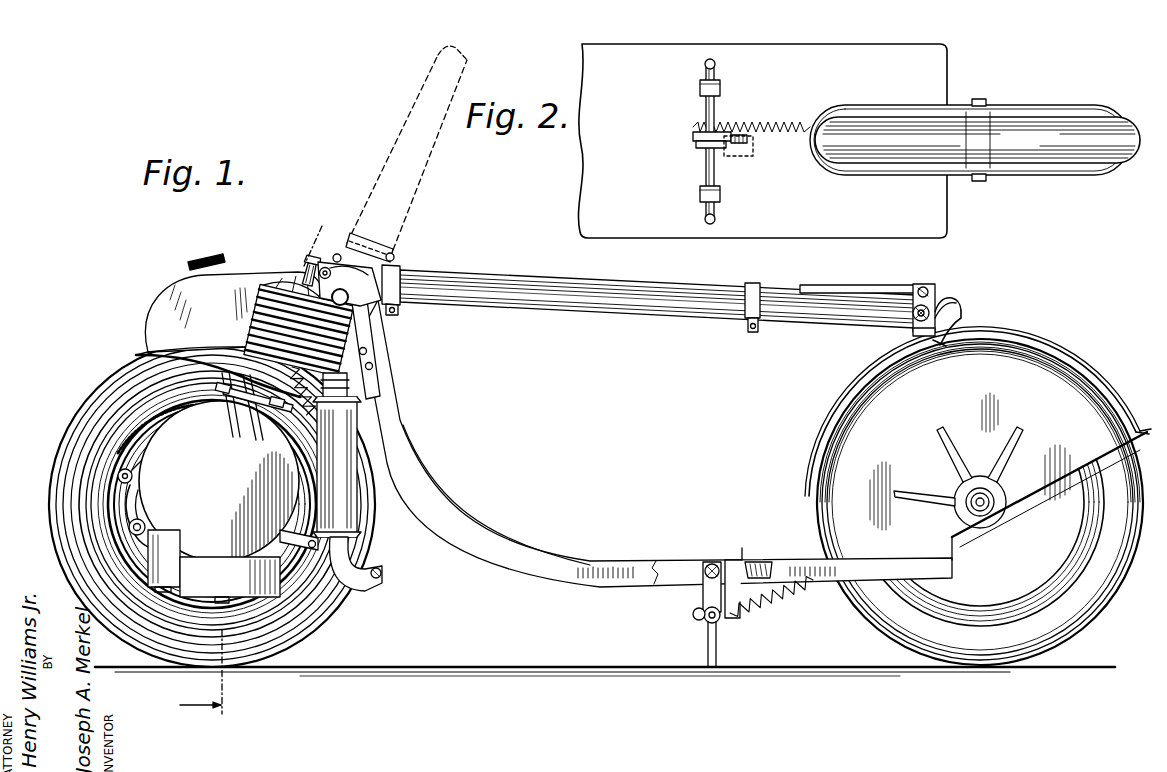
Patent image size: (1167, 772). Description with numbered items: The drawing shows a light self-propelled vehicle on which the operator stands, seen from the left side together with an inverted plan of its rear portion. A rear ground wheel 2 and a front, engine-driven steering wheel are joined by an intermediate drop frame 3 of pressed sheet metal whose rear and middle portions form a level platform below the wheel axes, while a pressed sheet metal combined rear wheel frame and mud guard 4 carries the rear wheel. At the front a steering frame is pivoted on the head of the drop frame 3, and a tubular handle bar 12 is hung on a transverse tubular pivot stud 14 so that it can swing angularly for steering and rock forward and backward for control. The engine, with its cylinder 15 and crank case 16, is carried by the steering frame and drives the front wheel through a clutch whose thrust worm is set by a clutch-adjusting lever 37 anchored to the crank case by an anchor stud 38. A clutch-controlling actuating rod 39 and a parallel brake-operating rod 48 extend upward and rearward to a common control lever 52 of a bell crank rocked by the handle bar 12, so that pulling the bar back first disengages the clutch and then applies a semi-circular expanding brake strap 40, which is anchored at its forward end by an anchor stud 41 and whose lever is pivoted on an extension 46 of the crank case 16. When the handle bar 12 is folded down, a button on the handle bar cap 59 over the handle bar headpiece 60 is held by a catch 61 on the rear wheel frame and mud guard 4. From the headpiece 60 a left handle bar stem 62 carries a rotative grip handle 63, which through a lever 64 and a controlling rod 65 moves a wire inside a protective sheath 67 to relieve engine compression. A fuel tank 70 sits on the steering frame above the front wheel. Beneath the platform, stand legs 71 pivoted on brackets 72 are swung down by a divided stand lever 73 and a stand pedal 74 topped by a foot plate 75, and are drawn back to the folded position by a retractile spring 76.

In FIG. 1, the rear ground wheel 2 is at (1080, 618).
In FIG. 2, the rear ground wheel 2 is at (1021, 122).
In FIG. 1, the intermediate drop frame 3 is at (557, 564).
In FIG. 2, the intermediate drop frame 3 is at (762, 141).
In FIG. 1, the combined rear wheel frame and mud guard 4 is at (978, 443).
In FIG. 2, the combined rear wheel frame and mud guard 4 is at (1018, 170).
In FIG. 1, the handle bar 12 is at (435, 150).
In FIG. 1, the pivot stud 14 is at (322, 236).
In FIG. 1, the cylinder 15 is at (262, 331).
In FIG. 1, the crank case 16 is at (219, 502).
In FIG. 1, the clutch-adjusting lever 37 is at (140, 510).
In FIG. 1, the anchor stud 38 is at (145, 527).
In FIG. 1, the clutch-controlling actuating rod 39 is at (334, 391).
In FIG. 1, the brake strap 40 is at (160, 427).
In FIG. 1, the anchor stud 41 is at (133, 479).
In FIG. 1, the extension 46 is at (296, 538).
In FIG. 1, the brake-operating rod 48 is at (365, 330).
In FIG. 1, the control lever 52 is at (402, 286).
In FIG. 1, the handle bar cap 59 is at (962, 312).
In FIG. 1, the handle bar headpiece 60 is at (940, 305).
In FIG. 1, the catch 61 is at (948, 324).
In FIG. 1, the left handle bar stem 62 is at (907, 324).
In FIG. 1, the rotative grip handle 63 is at (874, 330).
In FIG. 1, the lever 64 is at (921, 286).
In FIG. 1, the controlling rod 65 is at (857, 277).
In FIG. 1, the protective sheath 67 is at (704, 290).
In FIG. 1, the fuel tank 70 is at (228, 325).
In FIG. 1, the stand legs 71 is at (718, 636).
In FIG. 2, the stand legs 71 is at (716, 65).
In FIG. 2, the brackets 72 is at (721, 90).
In FIG. 1, the stand lever 73 is at (703, 588).
In FIG. 2, the stand lever 73 is at (700, 149).
In FIG. 1, the stand pedal 74 is at (763, 563).
In FIG. 2, the stand pedal 74 is at (694, 137).
In FIG. 1, the foot plate 75 is at (742, 556).
In FIG. 2, the foot plate 75 is at (760, 154).
In FIG. 1, the retractile spring 76 is at (772, 600).
In FIG. 2, the retractile spring 76 is at (797, 128).